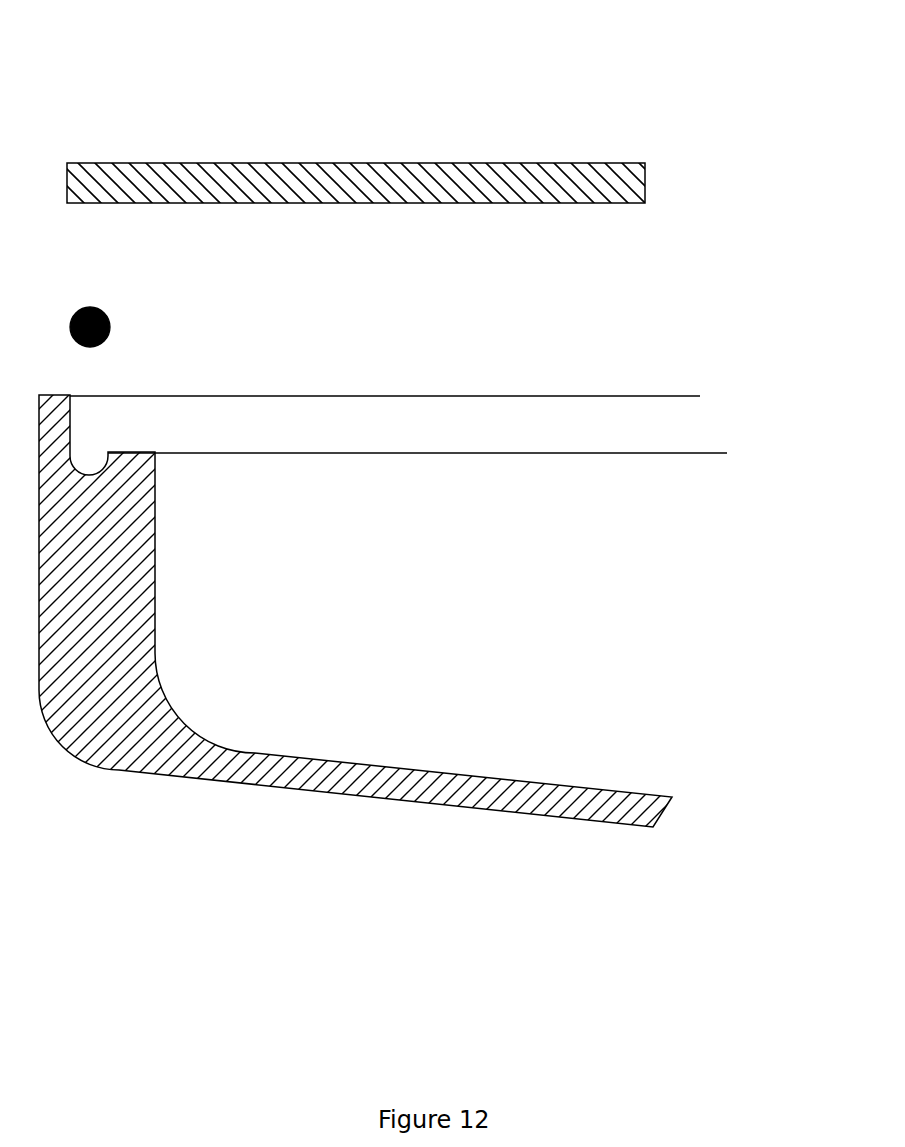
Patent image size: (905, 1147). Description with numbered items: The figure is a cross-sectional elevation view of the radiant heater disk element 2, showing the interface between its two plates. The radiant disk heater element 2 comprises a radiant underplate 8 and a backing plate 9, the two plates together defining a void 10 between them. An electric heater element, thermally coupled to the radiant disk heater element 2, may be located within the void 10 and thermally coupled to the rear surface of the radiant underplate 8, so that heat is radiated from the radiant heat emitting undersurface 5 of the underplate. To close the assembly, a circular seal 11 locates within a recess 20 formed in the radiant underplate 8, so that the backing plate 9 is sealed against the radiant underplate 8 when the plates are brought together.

The radiant heater disk element 2 is at (738, 129).
The radiant heat emitting undersurface 5 is at (383, 675).
The radiant underplate 8 is at (638, 797).
The backing plate 9 is at (578, 163).
The void 10 is at (446, 628).
The circular seal 11 is at (110, 334).
The recess 20 is at (104, 456).